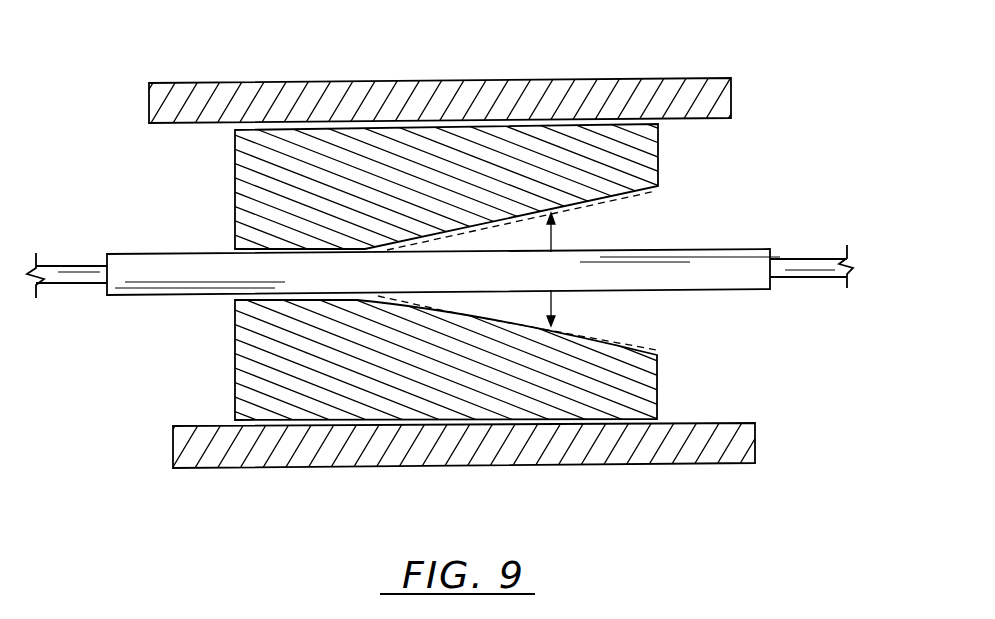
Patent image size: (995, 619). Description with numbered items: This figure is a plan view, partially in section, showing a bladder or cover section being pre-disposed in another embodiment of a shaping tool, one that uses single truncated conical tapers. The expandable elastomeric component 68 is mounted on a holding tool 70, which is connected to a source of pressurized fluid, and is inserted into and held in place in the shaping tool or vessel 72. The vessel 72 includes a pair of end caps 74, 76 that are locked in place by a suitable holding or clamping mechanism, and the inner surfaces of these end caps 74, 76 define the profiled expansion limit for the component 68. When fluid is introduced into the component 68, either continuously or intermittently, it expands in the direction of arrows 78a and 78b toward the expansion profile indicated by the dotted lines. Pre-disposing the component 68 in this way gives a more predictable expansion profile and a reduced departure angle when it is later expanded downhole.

The elastomeric component 68 is at (169, 268).
The holding tool 70 is at (797, 268).
The shaping tool or vessel 72 is at (722, 105).
The end cap 74 is at (253, 347).
The end cap 76 is at (658, 172).
The arrow 78a is at (553, 240).
The arrow 78b is at (553, 304).